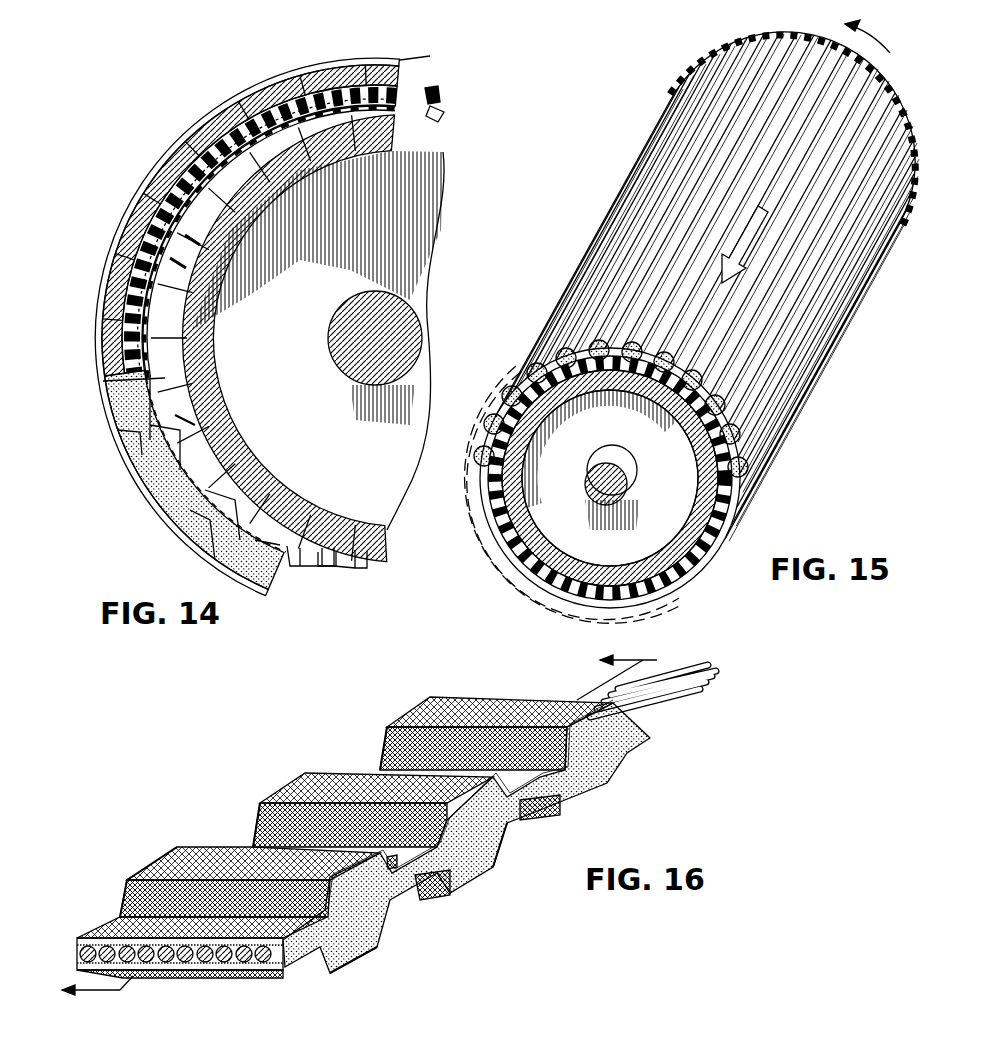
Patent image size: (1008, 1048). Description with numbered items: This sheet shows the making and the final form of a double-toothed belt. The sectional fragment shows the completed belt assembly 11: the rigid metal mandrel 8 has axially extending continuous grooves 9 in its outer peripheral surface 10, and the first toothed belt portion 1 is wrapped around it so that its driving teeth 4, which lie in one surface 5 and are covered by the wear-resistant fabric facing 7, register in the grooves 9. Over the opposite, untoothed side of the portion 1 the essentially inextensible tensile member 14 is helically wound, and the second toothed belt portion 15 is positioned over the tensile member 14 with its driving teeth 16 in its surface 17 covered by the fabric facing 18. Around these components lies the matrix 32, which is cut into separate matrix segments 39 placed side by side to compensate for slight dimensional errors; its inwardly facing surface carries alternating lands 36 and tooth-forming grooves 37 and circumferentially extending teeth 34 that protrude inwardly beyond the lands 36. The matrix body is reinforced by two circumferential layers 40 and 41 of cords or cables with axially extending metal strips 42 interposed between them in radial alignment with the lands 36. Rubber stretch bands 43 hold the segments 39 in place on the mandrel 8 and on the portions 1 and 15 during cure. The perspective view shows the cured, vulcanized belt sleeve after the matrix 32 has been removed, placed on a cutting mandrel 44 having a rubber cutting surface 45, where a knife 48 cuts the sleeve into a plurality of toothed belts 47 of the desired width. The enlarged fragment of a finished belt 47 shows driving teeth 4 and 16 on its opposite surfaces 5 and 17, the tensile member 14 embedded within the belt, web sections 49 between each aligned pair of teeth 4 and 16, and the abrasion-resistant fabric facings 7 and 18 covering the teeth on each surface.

In FIG. 14, the toothed belt portion 1 is at (436, 126).
In FIG. 14, the driving teeth 4 is at (172, 262).
In FIG. 16, the driving teeth 4 is at (600, 773).
In FIG. 16, the surface 5 is at (514, 832).
In FIG. 16, the wear-resistant facing 7 is at (440, 893).
In FIG. 14, the mandrel 8 is at (432, 182).
In FIG. 14, the grooves 9 is at (372, 128).
In FIG. 14, the outer peripheral surface 10 is at (190, 300).
In FIG. 14, the belt assembly 11 is at (232, 95).
In FIG. 14, the tensile member 14 is at (440, 110).
In FIG. 16, the tensile member 14 is at (712, 683).
In FIG. 14, the second toothed belt portion 15 is at (440, 90).
In FIG. 16, the driving teeth 16 is at (395, 760).
In FIG. 16, the surface 17 is at (435, 948).
In FIG. 16, the wear-resistant facing 18 is at (430, 705).
In FIG. 14, the matrix 32 is at (425, 60).
In FIG. 14, the teeth 34 is at (180, 420).
In FIG. 14, the lands 36 is at (312, 80).
In FIG. 14, the grooves 37 is at (350, 72).
In FIG. 14, the matrix segments 39 is at (404, 72).
In FIG. 14, the layer of strain-resisting members 40 is at (410, 82).
In FIG. 14, the layer of strain-resisting members 41 is at (420, 66).
In FIG. 14, the metal strips 42 is at (418, 70).
In FIG. 14, the rubber stretch bands 43 is at (268, 596).
In FIG. 15, the cutting mandrel 44 is at (528, 562).
In FIG. 15, the rubber cutting surface 45 is at (692, 572).
In FIG. 15, the toothed belts 47 is at (745, 480).
In FIG. 16, the toothed belts 47 is at (283, 782).
In FIG. 15, the knife 48 is at (752, 268).
In FIG. 16, the web sections 49 is at (552, 812).